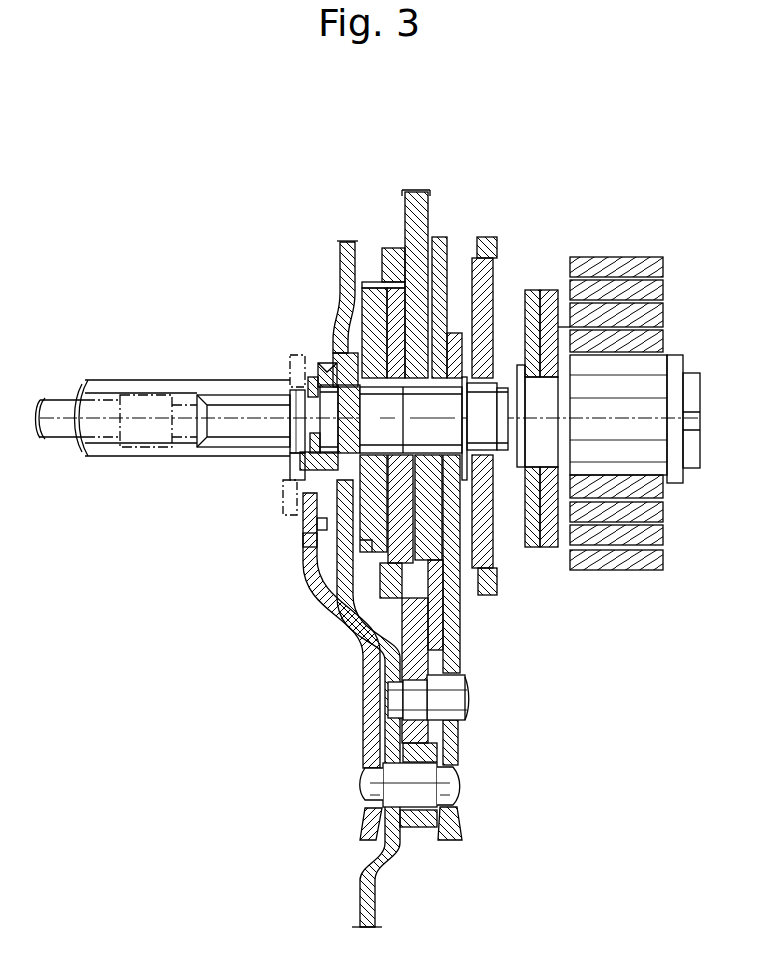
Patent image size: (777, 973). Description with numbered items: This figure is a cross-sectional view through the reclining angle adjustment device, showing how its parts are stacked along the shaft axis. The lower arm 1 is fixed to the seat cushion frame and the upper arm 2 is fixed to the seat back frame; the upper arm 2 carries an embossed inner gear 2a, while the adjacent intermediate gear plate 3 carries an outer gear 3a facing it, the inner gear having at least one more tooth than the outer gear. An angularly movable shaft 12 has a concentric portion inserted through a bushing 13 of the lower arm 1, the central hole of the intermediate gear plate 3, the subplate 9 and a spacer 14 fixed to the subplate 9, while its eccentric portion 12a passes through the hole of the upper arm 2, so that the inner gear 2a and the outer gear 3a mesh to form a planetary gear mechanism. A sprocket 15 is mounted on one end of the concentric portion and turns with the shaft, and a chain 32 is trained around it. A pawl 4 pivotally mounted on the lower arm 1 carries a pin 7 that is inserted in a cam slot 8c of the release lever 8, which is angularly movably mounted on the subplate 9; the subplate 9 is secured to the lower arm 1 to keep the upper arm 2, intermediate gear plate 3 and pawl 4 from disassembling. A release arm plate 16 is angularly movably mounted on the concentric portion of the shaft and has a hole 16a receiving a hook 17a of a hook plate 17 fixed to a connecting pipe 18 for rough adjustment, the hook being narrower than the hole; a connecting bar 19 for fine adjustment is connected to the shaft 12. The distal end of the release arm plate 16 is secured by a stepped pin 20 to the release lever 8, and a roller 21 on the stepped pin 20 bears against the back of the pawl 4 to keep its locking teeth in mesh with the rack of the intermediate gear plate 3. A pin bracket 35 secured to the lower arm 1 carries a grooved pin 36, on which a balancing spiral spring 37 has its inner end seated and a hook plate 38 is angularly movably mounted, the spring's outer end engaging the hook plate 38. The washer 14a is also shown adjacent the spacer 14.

The lower arm 1 is at (370, 908).
The upper arm 2 is at (383, 250).
The inner gear 2a is at (355, 575).
The intermediate gear plate 3 is at (420, 192).
The outer gear 3a is at (380, 565).
The pawl 4 is at (400, 725).
The pin 7 is at (460, 702).
The release lever 8 is at (453, 645).
The cam slot 8c is at (462, 676).
The subplate 9 is at (437, 240).
The angularly movable shaft 12 is at (475, 485).
The eccentric portion 12a is at (302, 488).
The bushing 13 is at (333, 365).
The spacer 14 is at (457, 585).
The bearing washer 14a is at (450, 335).
The sprocket 15 is at (488, 238).
The release arm plate 16 is at (305, 560).
The hole 16a is at (305, 540).
The hook plate 17 is at (302, 472).
The hook 17a is at (305, 522).
The connecting pipe 18 is at (110, 458).
The connecting bar 19 is at (52, 440).
The stepped pin 20 is at (450, 785).
The roller 21 is at (428, 826).
The chain 32 is at (495, 300).
The pin bracket 35 is at (533, 290).
The grooved pin 36 is at (640, 465).
The balancing spiral spring 37 is at (666, 320).
The hook plate 38 is at (551, 290).